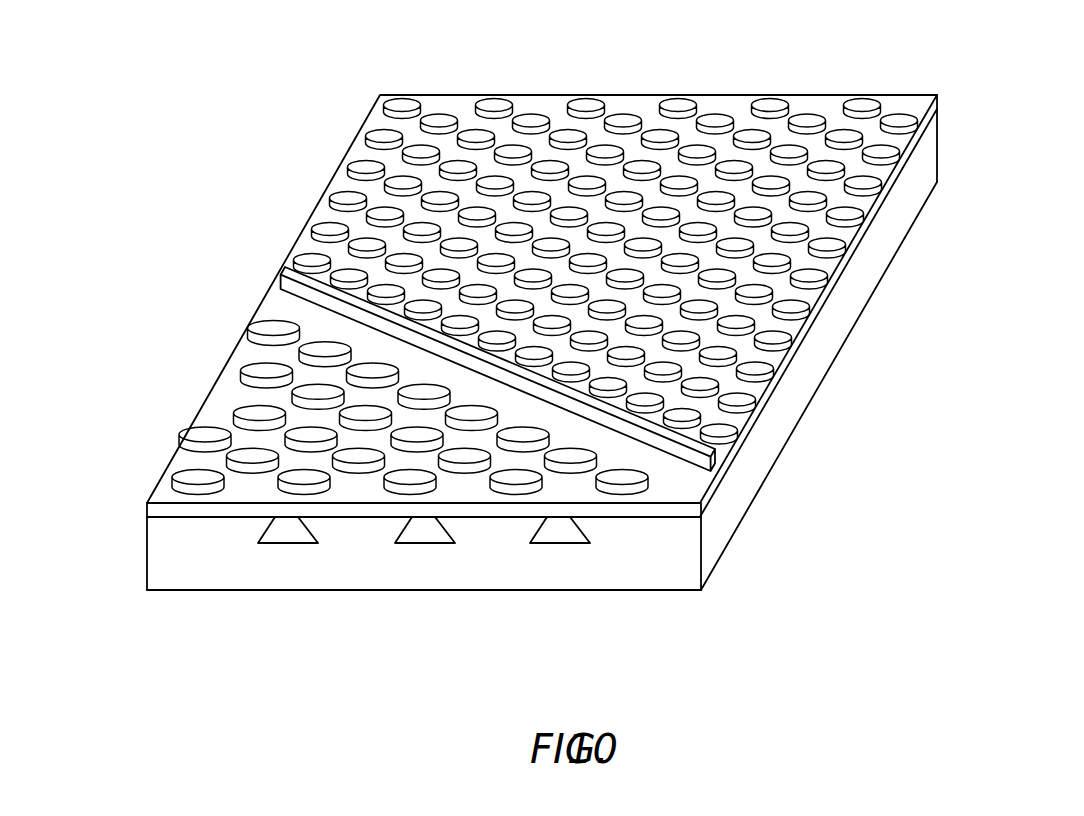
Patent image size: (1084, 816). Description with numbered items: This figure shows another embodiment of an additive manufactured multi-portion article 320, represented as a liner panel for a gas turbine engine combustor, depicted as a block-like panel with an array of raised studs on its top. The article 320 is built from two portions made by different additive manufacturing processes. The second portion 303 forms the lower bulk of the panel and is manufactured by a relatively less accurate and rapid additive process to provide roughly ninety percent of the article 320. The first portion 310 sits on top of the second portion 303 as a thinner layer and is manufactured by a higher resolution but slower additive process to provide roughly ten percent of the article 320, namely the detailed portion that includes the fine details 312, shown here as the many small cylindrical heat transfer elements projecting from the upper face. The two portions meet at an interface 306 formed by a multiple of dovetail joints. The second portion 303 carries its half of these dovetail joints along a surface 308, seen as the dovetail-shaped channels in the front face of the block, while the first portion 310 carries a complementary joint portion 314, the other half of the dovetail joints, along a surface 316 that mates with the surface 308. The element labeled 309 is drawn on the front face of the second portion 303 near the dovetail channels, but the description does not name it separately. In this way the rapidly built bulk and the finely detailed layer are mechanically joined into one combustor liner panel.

The additive manufactured multi-portion article 320 is at (264, 203).
The fine details 312 is at (843, 136).
The first portion 310 is at (770, 400).
The second portion 303 is at (738, 507).
The surface 316 is at (168, 517).
The interface 306 is at (128, 550).
The surface 308 is at (209, 519).
The base front wall 309 is at (268, 557).
The joint portion 314 is at (292, 538).